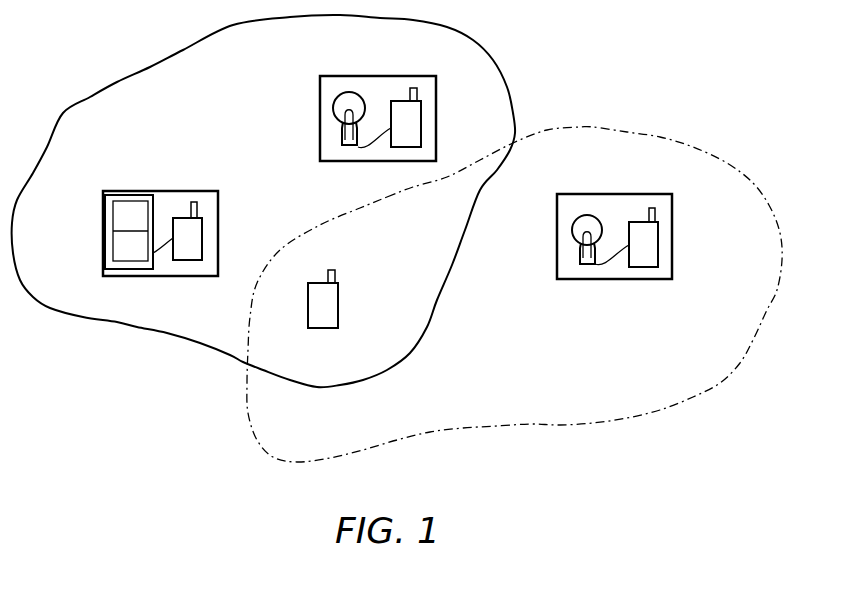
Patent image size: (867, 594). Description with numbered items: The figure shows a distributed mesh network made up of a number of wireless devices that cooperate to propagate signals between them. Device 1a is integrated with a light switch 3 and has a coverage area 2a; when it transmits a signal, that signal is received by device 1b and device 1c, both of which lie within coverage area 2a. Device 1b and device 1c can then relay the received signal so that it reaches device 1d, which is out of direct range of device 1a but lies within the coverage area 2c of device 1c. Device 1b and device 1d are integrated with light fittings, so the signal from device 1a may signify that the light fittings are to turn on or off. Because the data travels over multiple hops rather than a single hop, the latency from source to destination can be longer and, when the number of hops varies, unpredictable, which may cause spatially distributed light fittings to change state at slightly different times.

The device 1a is at (202, 225).
The device 1b is at (421, 112).
The device 1c is at (338, 293).
The device 1d is at (658, 232).
The coverage area 2a is at (138, 327).
The coverage area 2c is at (545, 425).
The light switch 3 is at (128, 190).